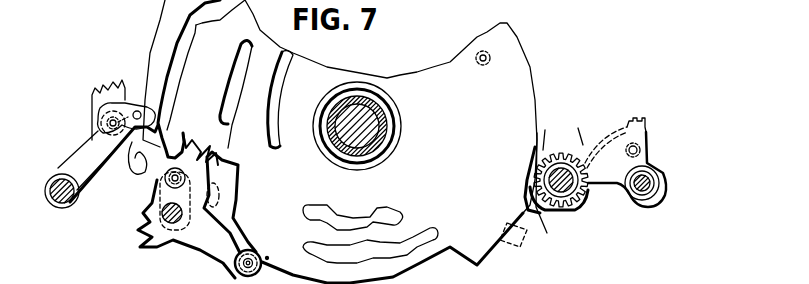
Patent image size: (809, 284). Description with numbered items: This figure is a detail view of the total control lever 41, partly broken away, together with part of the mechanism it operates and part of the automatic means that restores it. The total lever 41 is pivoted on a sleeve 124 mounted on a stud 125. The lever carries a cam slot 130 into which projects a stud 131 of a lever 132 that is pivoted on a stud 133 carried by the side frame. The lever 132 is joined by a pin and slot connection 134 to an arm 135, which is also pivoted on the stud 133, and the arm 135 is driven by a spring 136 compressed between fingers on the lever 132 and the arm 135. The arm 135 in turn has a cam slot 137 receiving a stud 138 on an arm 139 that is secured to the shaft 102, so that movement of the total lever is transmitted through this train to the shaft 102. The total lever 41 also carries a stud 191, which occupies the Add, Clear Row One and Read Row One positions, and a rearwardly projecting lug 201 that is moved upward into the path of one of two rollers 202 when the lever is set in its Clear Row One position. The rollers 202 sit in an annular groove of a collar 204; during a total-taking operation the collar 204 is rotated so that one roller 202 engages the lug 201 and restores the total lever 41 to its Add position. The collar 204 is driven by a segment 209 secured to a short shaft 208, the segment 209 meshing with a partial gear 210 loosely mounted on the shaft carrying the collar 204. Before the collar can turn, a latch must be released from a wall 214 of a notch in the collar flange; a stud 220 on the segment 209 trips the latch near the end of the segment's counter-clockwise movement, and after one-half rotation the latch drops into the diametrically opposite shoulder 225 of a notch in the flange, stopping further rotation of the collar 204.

The total control lever 41 is at (168, 5).
The shaft 102 is at (68, 197).
The sleeve 124 is at (380, 106).
The stud 125 is at (370, 121).
The cam slot 130 is at (267, 257).
The stud 131 is at (250, 260).
The lever 132 is at (195, 243).
The stud 133 is at (161, 215).
The pin and slot connection 134 is at (165, 181).
The arm 135 is at (158, 123).
The spring 136 is at (199, 141).
The cam slot 137 is at (143, 167).
The stud 138 is at (110, 124).
The arm 139 is at (80, 160).
The stud 191 is at (494, 55).
The lug 201 is at (541, 212).
The rollers 202 is at (566, 210).
The collar 204 is at (580, 140).
The short shaft 208 is at (659, 181).
The segment 209 is at (640, 148).
The partial gear 210 is at (583, 140).
The wall 214 is at (545, 152).
The stud 220 is at (647, 132).
The shoulder 225 is at (577, 203).